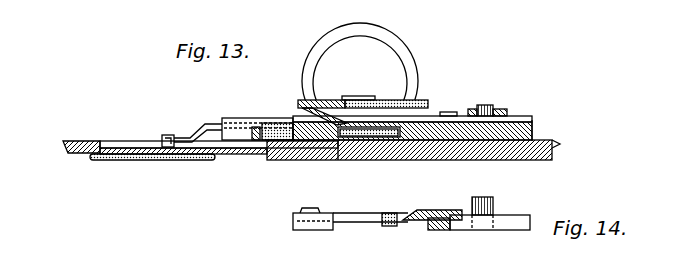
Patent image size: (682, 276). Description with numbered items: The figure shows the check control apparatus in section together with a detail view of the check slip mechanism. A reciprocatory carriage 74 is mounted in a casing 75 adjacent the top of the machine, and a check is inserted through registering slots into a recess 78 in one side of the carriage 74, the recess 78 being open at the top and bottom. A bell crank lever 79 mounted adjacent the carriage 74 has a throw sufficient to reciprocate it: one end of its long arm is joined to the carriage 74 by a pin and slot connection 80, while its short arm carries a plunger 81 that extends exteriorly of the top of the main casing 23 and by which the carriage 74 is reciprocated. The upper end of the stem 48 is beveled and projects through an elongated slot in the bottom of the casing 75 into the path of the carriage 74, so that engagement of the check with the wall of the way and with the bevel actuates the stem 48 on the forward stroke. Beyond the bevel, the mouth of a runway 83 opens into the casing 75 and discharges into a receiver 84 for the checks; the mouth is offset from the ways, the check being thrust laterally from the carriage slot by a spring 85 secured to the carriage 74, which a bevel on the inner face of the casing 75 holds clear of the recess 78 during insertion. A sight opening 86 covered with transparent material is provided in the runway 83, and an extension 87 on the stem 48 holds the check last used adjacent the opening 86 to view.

In FIG. 13, the casing 23 is at (553, 160).
In FIG. 13, the stem 48 is at (267, 118).
In FIG. 13, the reciprocatory carriage 74 is at (534, 130).
In FIG. 14, the reciprocatory carriage 74 is at (452, 231).
In FIG. 13, the casing 75 is at (534, 120).
In FIG. 14, the casing 75 is at (442, 210).
In FIG. 13, the recess 78 is at (338, 150).
In FIG. 14, the recess 78 is at (334, 223).
In FIG. 13, the bell crank lever 79 is at (461, 112).
In FIG. 13, the pin and slot connection 80 is at (488, 105).
In FIG. 14, the pin and slot connection 80 is at (494, 198).
In FIG. 13, the plunger 81 is at (300, 102).
In FIG. 13, the runway 83 is at (386, 138).
In FIG. 13, the receiver 84 is at (386, 54).
In FIG. 13, the spring 85 is at (398, 100).
In FIG. 14, the spring 85 is at (388, 228).
In FIG. 13, the sight opening 86 is at (110, 159).
In FIG. 13, the extension 87 is at (178, 134).